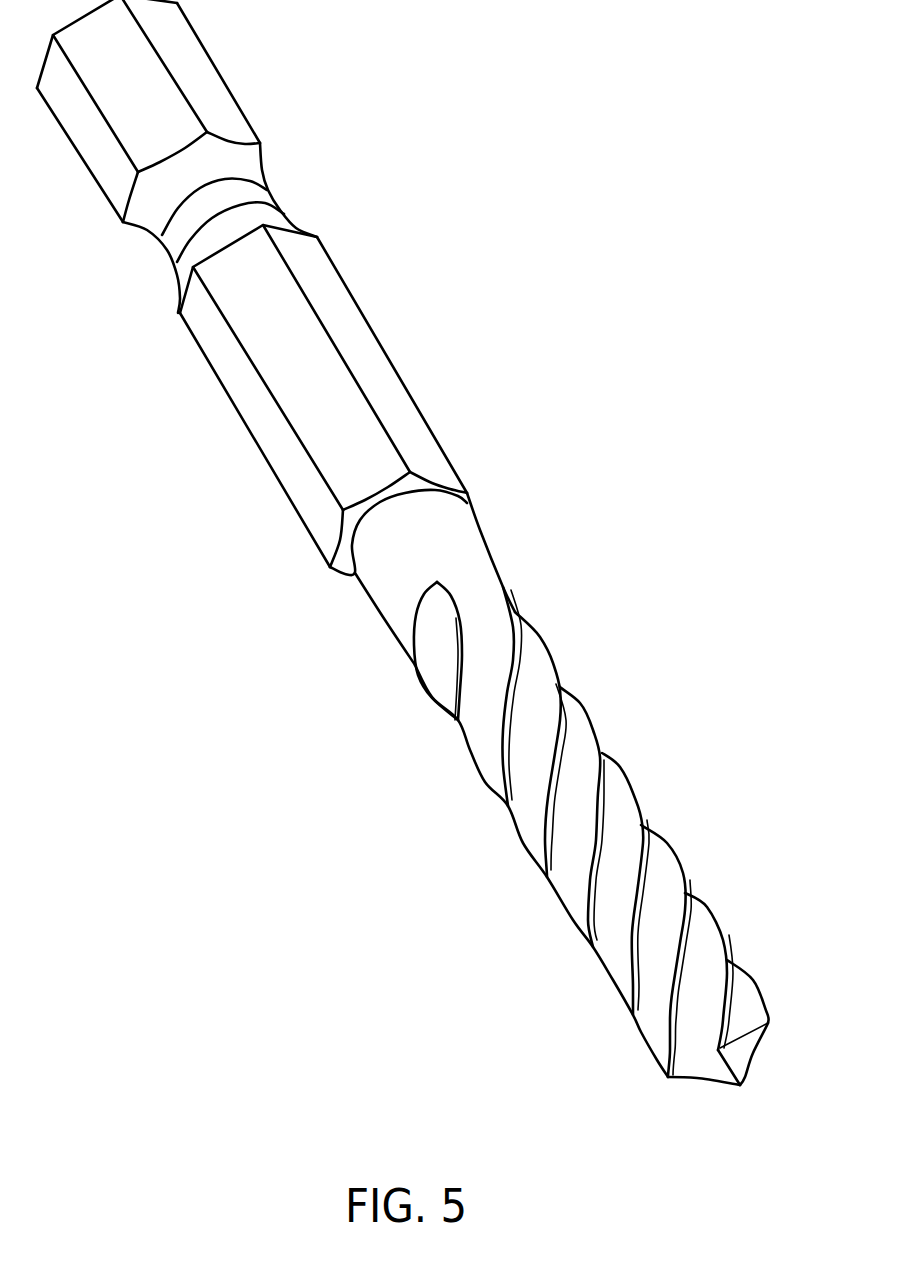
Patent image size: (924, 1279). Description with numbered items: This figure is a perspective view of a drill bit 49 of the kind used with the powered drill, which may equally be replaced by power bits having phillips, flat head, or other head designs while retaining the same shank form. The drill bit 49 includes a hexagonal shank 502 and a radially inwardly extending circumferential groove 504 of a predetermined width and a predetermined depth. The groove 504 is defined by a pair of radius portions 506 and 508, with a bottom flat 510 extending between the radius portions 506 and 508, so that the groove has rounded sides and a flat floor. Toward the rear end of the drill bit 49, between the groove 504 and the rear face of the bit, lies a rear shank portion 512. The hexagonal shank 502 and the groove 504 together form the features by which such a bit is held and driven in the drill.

The drill bit 49 is at (403, 542).
The hexagonal shank 502 is at (357, 323).
The circumferential groove 504 is at (277, 190).
The radius portion 506 is at (247, 162).
The radius portion 508 is at (182, 292).
The bottom flat 510 is at (170, 263).
The rear shank portion 512 is at (205, 90).